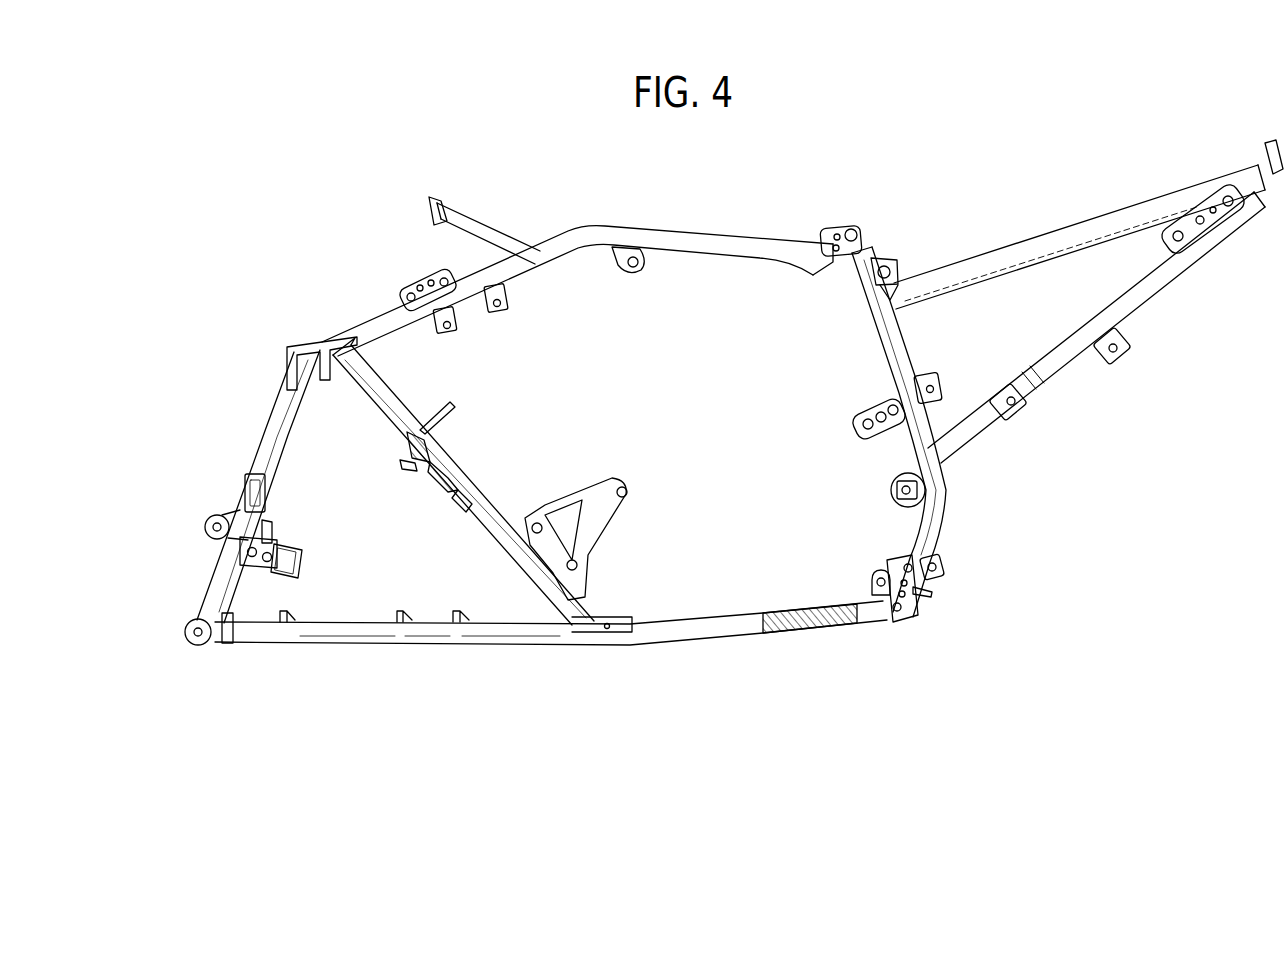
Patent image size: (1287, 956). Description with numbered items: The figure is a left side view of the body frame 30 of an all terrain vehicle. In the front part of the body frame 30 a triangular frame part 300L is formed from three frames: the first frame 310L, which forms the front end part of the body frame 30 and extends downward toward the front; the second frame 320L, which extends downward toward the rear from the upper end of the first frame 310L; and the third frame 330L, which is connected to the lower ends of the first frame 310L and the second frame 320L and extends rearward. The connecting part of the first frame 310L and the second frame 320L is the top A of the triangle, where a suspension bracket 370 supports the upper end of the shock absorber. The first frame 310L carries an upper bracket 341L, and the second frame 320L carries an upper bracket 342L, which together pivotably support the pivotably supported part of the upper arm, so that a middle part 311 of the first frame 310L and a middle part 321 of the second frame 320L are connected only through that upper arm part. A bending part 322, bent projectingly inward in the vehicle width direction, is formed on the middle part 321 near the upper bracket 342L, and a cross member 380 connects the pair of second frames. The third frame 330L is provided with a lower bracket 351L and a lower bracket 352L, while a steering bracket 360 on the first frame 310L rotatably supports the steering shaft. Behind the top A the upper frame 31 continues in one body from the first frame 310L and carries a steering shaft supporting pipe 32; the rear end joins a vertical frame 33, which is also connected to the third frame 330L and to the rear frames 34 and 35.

The body frame 30 is at (1108, 116).
The upper frame 31 is at (565, 232).
The steering shaft supporting pipe 32 is at (478, 224).
The vertical frame 33 is at (938, 522).
The rear frame 34 is at (1037, 250).
The rear frame 35 is at (1065, 373).
The triangular frame part 300L is at (352, 706).
The first frame 310L is at (274, 417).
The middle part 311 is at (262, 458).
The second frame 320L is at (402, 382).
The middle part 321 is at (470, 491).
The bending part 322 is at (450, 502).
The third frame 330L is at (542, 651).
The upper bracket 341L is at (245, 489).
The upper bracket 342L is at (482, 490).
The lower bracket 351L is at (205, 646).
The lower bracket 352L is at (398, 646).
The steering bracket 360 is at (278, 539).
The suspension bracket 370 is at (300, 345).
The cross member 380 is at (408, 457).